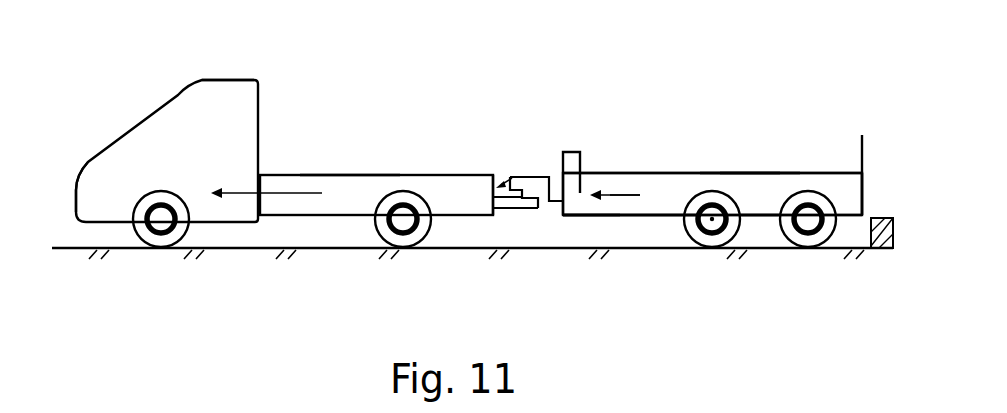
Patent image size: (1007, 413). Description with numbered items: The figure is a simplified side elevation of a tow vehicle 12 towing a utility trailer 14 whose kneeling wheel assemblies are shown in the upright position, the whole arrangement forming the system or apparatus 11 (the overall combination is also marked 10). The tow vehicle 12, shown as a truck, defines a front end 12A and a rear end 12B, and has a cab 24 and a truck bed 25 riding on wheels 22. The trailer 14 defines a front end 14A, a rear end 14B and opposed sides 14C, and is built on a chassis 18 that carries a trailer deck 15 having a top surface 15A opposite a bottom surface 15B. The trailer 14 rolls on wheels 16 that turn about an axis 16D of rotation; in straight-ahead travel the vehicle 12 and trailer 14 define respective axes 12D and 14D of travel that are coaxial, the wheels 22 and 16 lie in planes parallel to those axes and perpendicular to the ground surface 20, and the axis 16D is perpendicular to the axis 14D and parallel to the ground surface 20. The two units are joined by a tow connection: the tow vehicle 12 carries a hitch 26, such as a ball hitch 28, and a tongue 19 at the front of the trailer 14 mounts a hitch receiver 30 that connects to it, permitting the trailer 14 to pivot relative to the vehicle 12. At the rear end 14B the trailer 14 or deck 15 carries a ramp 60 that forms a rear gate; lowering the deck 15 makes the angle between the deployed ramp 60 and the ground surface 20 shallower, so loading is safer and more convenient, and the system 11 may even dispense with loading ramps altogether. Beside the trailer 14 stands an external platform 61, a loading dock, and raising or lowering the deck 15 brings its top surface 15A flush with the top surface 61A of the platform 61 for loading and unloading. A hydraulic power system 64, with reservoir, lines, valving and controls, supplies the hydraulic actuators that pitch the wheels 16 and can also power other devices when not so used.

The vehicle combination 10 is at (665, 184).
The system or apparatus 11 is at (687, 86).
The tow vehicle 12 is at (153, 118).
The front end of tow vehicle 12A is at (58, 181).
The rear end of tow vehicle 12B is at (457, 215).
The axis of travel of tow vehicle 12D is at (265, 177).
The trailer 14 is at (598, 183).
The front end of trailer 14A is at (506, 207).
The rear end of trailer 14B is at (884, 165).
The opposed sides of trailer 14C is at (652, 204).
The axis of travel of trailer 14D is at (620, 194).
The trailer deck 15 is at (735, 173).
The top surface of deck 15A is at (762, 173).
The bottom surface of deck 15B is at (757, 216).
The trailer wheels 16 is at (713, 192).
The axis of rotation of wheels 16D is at (712, 226).
The chassis 18 is at (583, 216).
The tongue 19 is at (562, 210).
The ground surface 20 is at (243, 242).
The tow vehicle wheels 22 is at (161, 191).
The cab 24 is at (210, 80).
The truck bed 25 is at (327, 174).
The hitch 26 is at (518, 210).
The ball hitch 28 is at (526, 178).
The hitch receiver 30 is at (549, 177).
The ramp 60 is at (862, 136).
The external platform 61 is at (878, 217).
The top surface of platform 61A is at (892, 232).
The hydraulic power system 64 is at (571, 152).